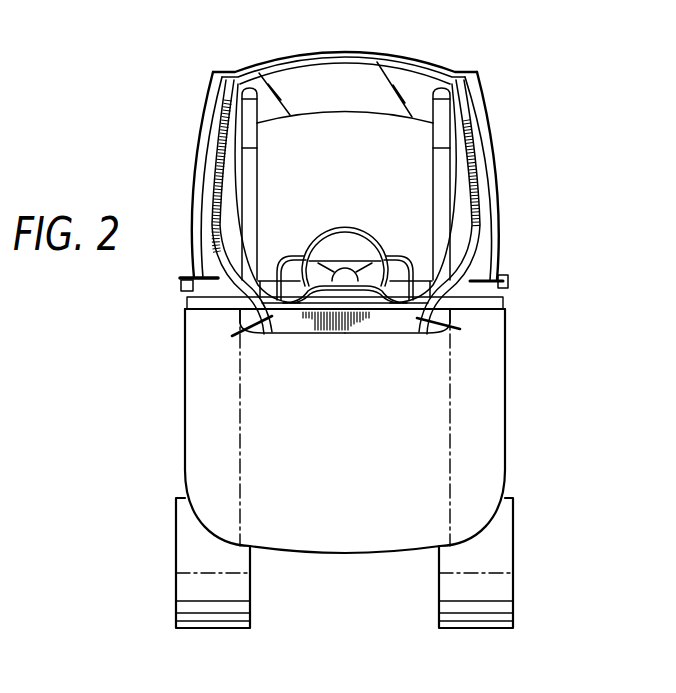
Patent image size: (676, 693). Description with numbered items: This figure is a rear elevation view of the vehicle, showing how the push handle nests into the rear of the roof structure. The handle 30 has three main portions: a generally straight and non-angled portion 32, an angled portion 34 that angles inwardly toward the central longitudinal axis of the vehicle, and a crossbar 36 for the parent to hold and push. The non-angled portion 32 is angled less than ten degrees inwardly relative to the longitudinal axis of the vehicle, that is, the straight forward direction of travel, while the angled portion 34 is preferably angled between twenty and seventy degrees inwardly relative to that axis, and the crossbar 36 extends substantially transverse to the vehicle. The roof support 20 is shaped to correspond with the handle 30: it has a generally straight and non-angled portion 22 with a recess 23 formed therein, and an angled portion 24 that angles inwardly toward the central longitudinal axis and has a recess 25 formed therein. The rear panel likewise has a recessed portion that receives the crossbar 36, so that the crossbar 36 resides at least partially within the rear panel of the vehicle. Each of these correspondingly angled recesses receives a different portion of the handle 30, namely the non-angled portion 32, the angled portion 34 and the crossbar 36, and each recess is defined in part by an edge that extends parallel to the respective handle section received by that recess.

The roof support 20 is at (516, 127).
The non-angled portion 22 is at (487, 167).
The recess 23 is at (483, 210).
The angled portion 24 is at (478, 260).
The recess 25 is at (502, 292).
The handle 30 is at (422, 316).
The non-angled portion 32 is at (212, 158).
The angled portion 34 is at (187, 280).
The crossbar 36 is at (272, 318).